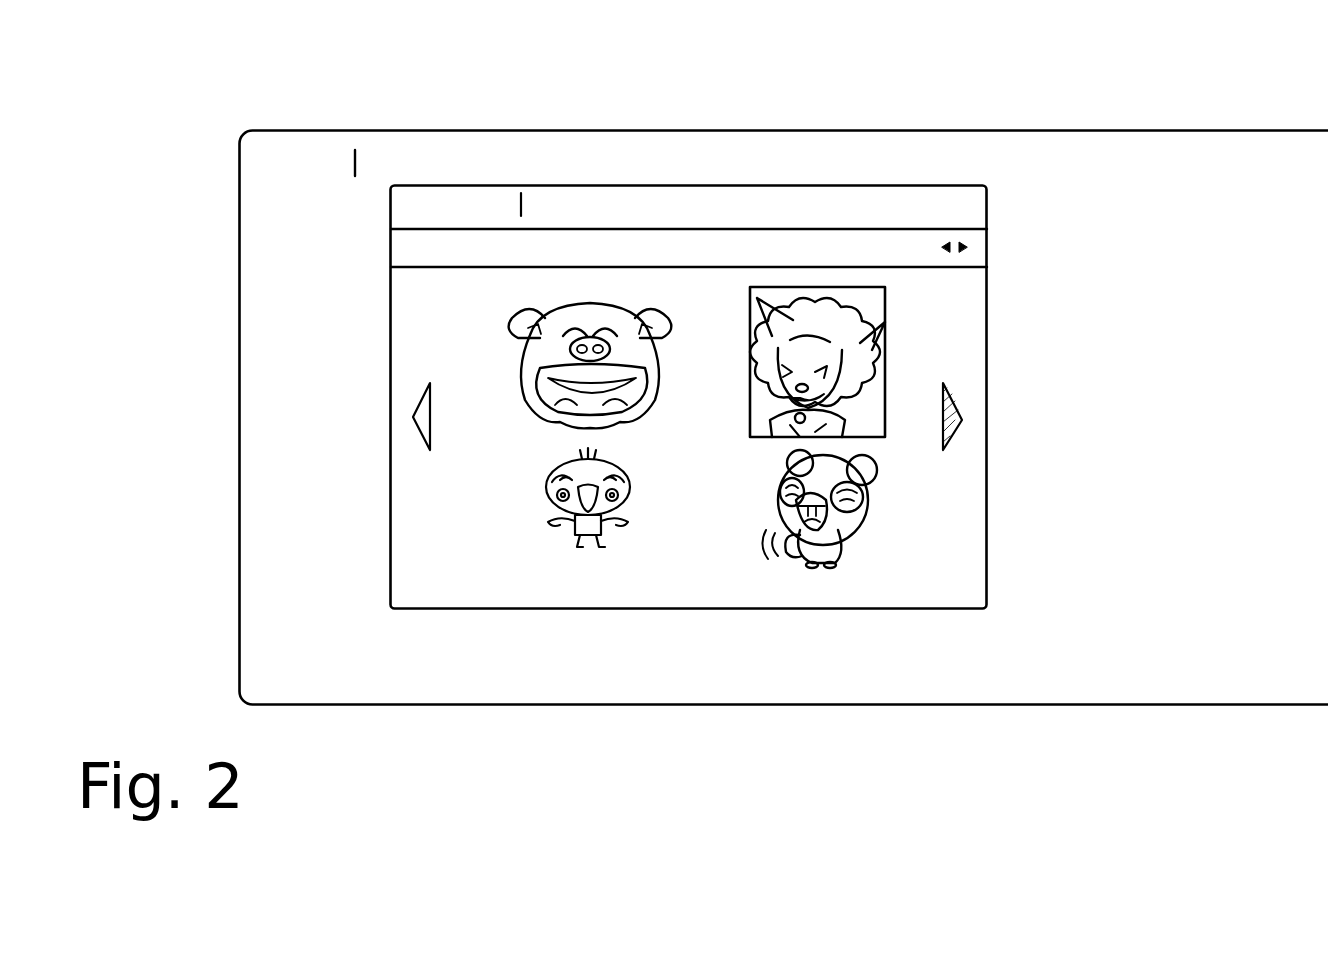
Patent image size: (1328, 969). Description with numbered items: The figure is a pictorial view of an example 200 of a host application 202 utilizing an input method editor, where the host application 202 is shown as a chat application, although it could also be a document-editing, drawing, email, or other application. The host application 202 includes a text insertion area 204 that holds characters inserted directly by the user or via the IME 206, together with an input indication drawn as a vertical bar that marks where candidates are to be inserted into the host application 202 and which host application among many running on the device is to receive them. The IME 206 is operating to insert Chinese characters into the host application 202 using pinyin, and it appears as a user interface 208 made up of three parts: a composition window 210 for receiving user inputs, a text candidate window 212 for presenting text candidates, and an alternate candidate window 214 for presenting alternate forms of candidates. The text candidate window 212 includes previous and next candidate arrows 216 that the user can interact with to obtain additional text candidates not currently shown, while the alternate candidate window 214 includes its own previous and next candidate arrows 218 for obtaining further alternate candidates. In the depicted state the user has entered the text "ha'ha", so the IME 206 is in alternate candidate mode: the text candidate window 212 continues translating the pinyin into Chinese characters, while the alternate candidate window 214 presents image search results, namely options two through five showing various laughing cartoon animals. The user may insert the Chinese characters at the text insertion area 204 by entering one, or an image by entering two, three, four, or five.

The example 200 is at (313, 84).
The host application 202 is at (735, 130).
The text insertion area 204 is at (263, 193).
The IME 206 is at (535, 625).
The user interface 208 is at (903, 186).
The composition window 210 is at (987, 200).
The text candidate window 212 is at (987, 243).
The alternate candidate window 214 is at (987, 293).
The previous and next candidate arrows 216 is at (958, 266).
The previous and next candidate arrows 218 is at (962, 420).